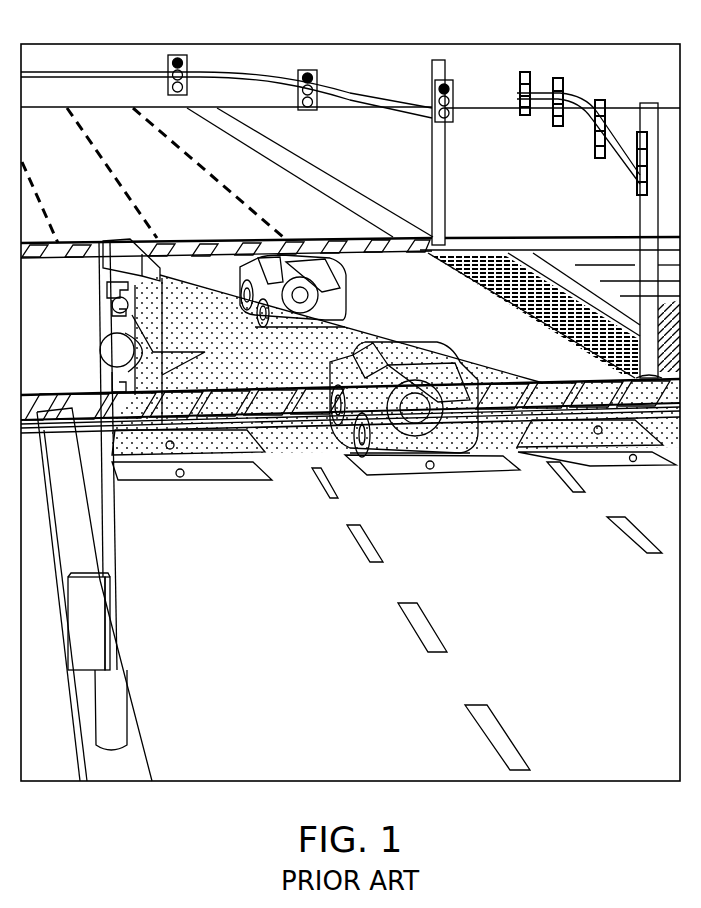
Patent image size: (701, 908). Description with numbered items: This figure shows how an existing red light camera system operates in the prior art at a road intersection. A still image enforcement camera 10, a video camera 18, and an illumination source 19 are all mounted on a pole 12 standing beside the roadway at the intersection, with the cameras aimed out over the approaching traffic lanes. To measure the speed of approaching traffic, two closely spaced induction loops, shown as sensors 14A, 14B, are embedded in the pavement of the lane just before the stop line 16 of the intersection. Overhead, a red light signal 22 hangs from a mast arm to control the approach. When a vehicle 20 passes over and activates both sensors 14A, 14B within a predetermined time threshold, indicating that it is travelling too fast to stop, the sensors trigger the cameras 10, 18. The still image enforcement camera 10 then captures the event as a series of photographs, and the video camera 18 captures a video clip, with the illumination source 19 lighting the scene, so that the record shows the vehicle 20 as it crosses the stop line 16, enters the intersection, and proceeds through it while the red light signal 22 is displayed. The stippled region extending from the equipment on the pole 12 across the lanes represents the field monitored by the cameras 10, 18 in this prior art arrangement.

The still image enforcement camera 10 is at (113, 257).
The pole 12 is at (107, 543).
The sensor 14A is at (183, 476).
The sensor 14B is at (170, 449).
The stop line 16 is at (520, 455).
The video camera 18 is at (113, 305).
The illumination source 19 is at (110, 349).
The vehicle 20 is at (447, 433).
The red light signal 22 is at (310, 70).